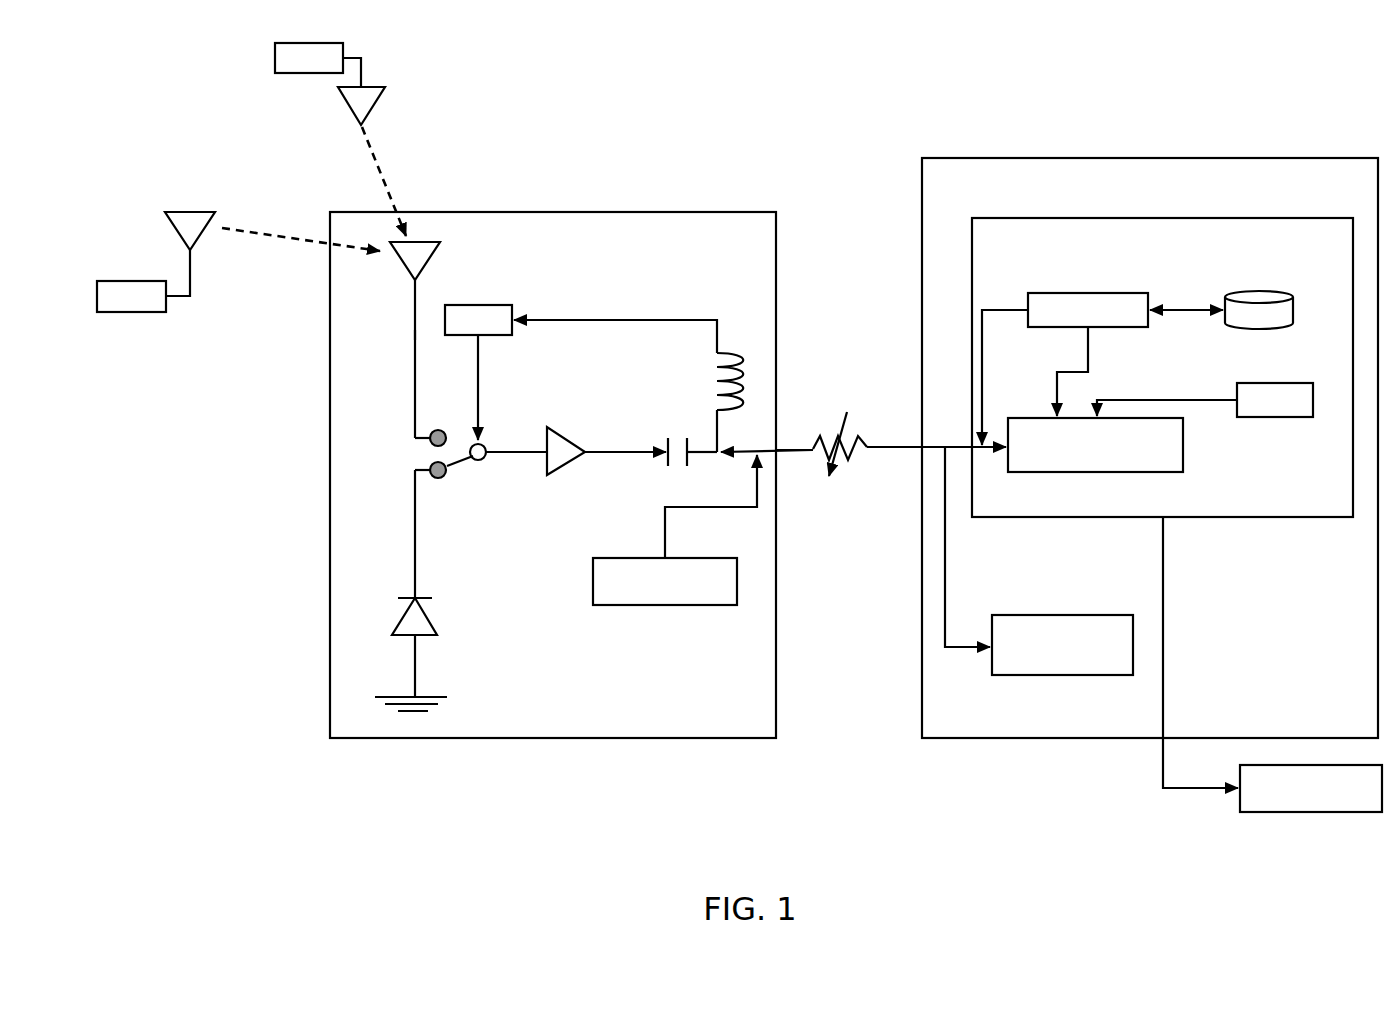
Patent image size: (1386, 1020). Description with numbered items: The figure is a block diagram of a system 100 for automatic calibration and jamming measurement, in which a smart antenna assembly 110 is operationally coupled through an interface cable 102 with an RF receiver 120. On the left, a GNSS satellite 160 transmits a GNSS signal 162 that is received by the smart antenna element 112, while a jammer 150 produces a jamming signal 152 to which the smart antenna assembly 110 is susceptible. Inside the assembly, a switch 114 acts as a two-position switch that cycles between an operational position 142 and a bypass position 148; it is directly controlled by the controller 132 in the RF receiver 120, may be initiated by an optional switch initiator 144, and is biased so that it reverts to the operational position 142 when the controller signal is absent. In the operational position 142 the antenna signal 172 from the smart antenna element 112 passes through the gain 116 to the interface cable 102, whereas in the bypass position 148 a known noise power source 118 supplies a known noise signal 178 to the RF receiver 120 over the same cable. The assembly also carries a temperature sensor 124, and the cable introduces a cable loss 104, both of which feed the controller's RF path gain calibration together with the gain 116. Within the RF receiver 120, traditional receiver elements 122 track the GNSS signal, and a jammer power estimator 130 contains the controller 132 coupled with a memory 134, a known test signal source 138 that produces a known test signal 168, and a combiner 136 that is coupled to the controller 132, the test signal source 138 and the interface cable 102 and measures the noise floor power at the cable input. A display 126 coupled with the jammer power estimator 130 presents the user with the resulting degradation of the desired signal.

The system 100 is at (117, 82).
The interface cable 102 is at (885, 448).
The cable loss (X) 104 is at (848, 458).
The smart antenna assembly 110 is at (770, 212).
The smart antenna element 112 is at (413, 270).
The switch 114 is at (483, 462).
The gain (Y) 116 is at (577, 463).
The known noise power source 118 is at (392, 635).
The RF receiver 120 is at (995, 158).
The traditional receiver elements 122 is at (1103, 683).
The temperature sensor 124 is at (703, 608).
The display 126 is at (1350, 818).
The jammer power estimator 130 is at (1003, 218).
The controller 132 is at (1063, 293).
The memory 134 is at (1260, 290).
The combiner 136 is at (1085, 475).
The known test signal source 138 is at (1300, 420).
The operational position 142 is at (430, 444).
The switch initiator 144 is at (498, 337).
The bypass position 148 is at (430, 477).
The jammer 150 is at (150, 323).
The jamming signal 152 is at (300, 238).
The GNSS satellite 160 is at (291, 76).
The GNSS signal 162 is at (388, 160).
The known test signal (B) 168 is at (1168, 395).
The antenna signal 172 is at (414, 322).
The known noise signal 178 is at (415, 525).